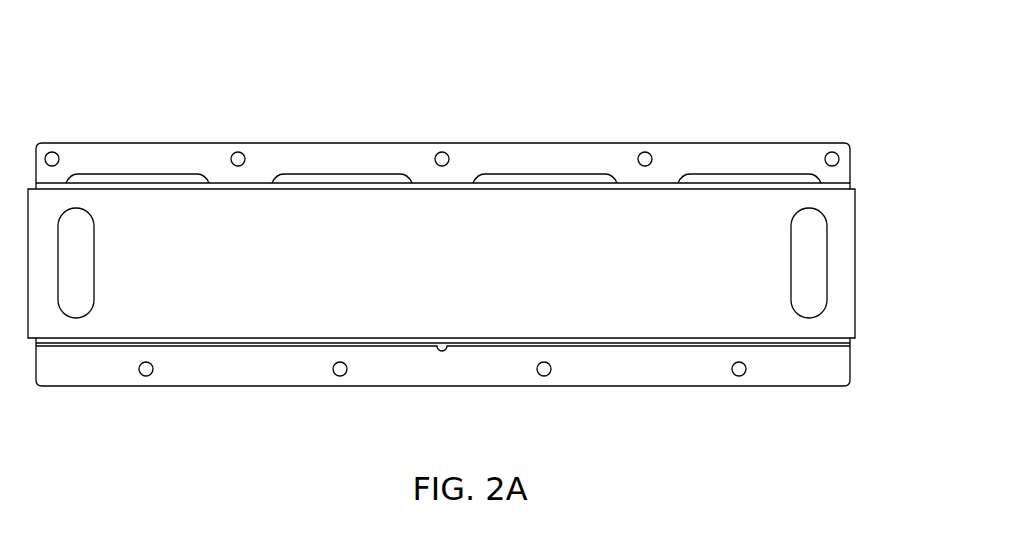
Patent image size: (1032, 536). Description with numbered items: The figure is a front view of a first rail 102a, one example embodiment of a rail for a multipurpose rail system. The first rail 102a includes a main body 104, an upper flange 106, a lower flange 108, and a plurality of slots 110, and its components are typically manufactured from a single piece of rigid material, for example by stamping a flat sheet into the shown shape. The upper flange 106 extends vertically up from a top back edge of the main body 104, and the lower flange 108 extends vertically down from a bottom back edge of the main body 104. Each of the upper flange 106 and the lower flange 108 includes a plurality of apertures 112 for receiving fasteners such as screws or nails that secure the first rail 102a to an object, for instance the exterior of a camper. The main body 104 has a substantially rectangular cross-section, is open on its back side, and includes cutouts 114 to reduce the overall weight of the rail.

The first rail 102a is at (832, 46).
The main body 104 is at (427, 281).
The upper flange 106 is at (455, 143).
The lower flange 108 is at (623, 387).
The slots 110 is at (138, 181).
The apertures 112 is at (240, 154).
The cutouts 114 is at (95, 263).